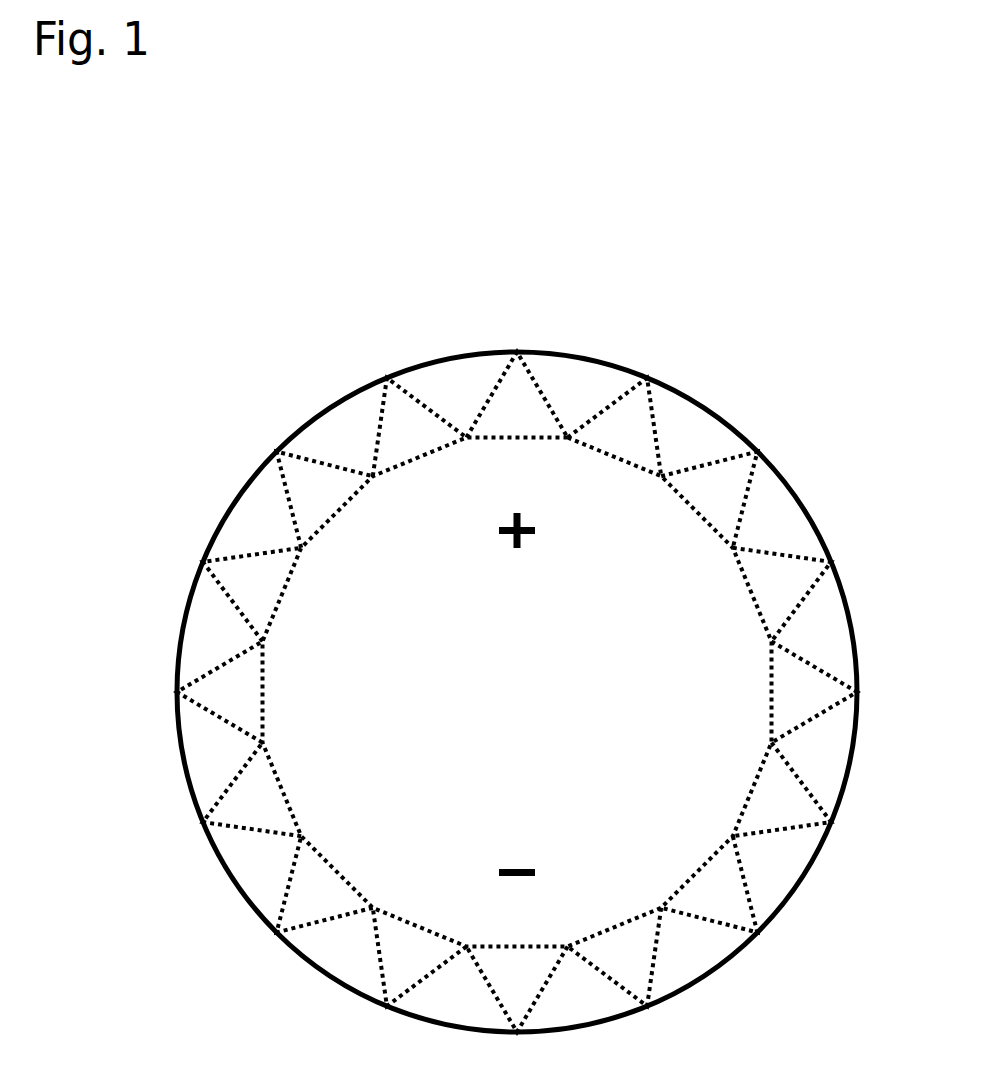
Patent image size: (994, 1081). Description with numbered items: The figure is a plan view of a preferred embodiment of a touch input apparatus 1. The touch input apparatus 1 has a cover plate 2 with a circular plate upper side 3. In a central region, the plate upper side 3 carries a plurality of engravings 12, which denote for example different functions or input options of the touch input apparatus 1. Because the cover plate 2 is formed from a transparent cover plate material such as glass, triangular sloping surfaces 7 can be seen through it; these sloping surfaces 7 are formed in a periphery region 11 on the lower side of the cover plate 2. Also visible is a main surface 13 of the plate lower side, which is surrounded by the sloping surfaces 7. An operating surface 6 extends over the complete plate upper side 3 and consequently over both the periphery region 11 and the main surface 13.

The touch input apparatus 1 is at (489, 642).
The cover plate 2 is at (491, 642).
The plate upper side 3 is at (461, 692).
The operating surface 6 is at (225, 522).
The triangular sloping surfaces 7 is at (462, 642).
The periphery region 11 is at (572, 394).
The engravings 12 is at (517, 502).
The main surface 13 is at (657, 636).